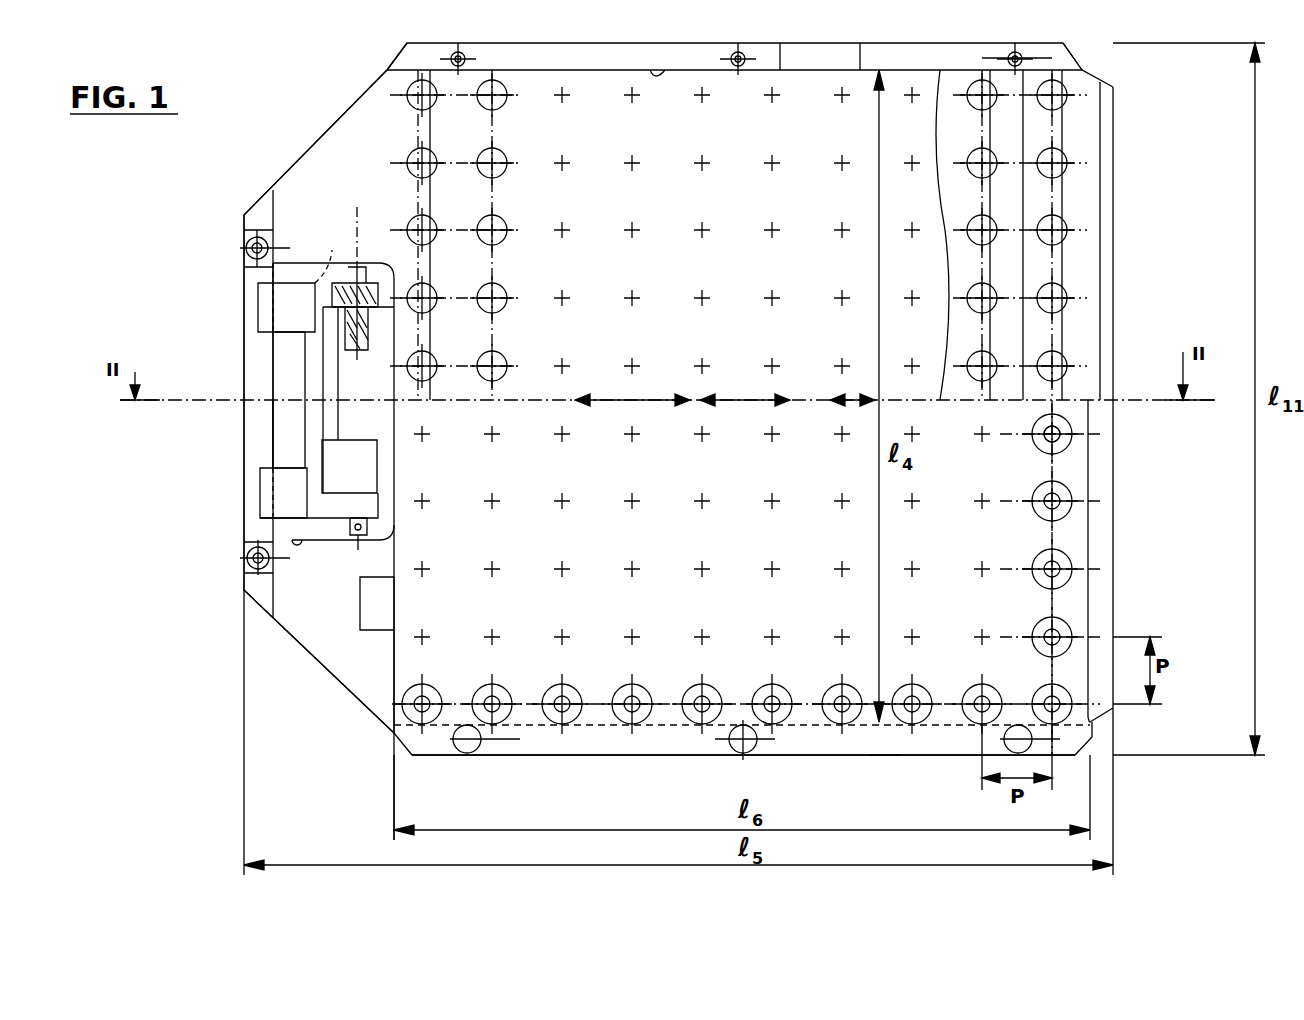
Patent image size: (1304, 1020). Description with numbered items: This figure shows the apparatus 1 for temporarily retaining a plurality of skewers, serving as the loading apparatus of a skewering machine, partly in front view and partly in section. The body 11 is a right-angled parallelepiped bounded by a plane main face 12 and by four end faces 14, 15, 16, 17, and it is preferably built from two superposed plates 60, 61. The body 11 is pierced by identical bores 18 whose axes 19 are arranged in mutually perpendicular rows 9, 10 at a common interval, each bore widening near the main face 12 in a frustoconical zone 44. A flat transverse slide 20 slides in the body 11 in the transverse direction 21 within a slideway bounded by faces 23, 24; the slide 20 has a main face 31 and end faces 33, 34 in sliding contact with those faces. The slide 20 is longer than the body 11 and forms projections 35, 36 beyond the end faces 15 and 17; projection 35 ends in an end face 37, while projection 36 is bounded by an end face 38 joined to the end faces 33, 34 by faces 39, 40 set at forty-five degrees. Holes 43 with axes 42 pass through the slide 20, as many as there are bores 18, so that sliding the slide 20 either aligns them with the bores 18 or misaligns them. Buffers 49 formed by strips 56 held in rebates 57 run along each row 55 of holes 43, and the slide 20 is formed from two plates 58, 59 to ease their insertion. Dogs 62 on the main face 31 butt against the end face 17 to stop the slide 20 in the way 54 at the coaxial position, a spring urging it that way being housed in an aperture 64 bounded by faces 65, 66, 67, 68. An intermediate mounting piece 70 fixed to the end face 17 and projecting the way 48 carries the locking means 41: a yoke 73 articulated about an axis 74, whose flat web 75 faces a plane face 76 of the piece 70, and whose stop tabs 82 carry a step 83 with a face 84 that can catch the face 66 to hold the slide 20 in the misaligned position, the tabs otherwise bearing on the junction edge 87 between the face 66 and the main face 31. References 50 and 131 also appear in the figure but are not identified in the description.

The apparatus 1 is at (262, 660).
The row 9 is at (1058, 465).
The row 10 is at (953, 740).
The body 11 is at (537, 742).
The main face 12 is at (450, 680).
The end face 14 is at (588, 755).
The end face 15 is at (1088, 445).
The end face 16 is at (830, 40).
The end face 17 is at (394, 668).
The bore 18 is at (1035, 445).
The axis 19 is at (1058, 428).
The slide 20 is at (330, 150).
The transverse direction 21 is at (745, 405).
The face of slideway 23 is at (660, 725).
The face of slideway 24 is at (668, 70).
The main face of slide 31 is at (792, 95).
The end face of slide 33 is at (805, 725).
The end face of slide 34 is at (880, 70).
The projection 35 is at (1100, 530).
The projection 36 is at (342, 670).
The end face 37 is at (1113, 250).
The end face 38 is at (262, 498).
The end face 39 is at (300, 645).
The end face 40 is at (320, 115).
The locking means 41 is at (230, 345).
The axis 42 is at (1055, 228).
The hole 43 is at (1062, 300).
The frustoconical zone 44 is at (1035, 508).
The way 48 is at (610, 405).
The buffer 49 is at (990, 80).
The T-slot 50 is at (985, 160).
The way 54 is at (832, 402).
The row of holes 55 is at (1060, 185).
The strip 56 is at (1082, 70).
The rebate 57 is at (1100, 140).
The plate 58 is at (510, 80).
The plate 59 is at (375, 72).
The plate 60 is at (890, 740).
The plate 61 is at (600, 58).
The dog 62 is at (357, 207).
The aperture 64 is at (273, 418).
The face of aperture 65 is at (377, 478).
The face of aperture 66 is at (273, 385).
The face of aperture 67 is at (298, 545).
The face of aperture 68 is at (312, 250).
The intermediate mounting piece 70 is at (394, 405).
The yoke 73 is at (358, 400).
The axis 74 is at (392, 500).
The flat web 75 is at (323, 375).
The plane face 76 is at (291, 451).
The stop tab 82 is at (250, 280).
The step 83 is at (305, 305).
The face of step 84 is at (258, 300).
The junction edge 87 is at (280, 345).
The bushing bore 131 is at (1008, 570).